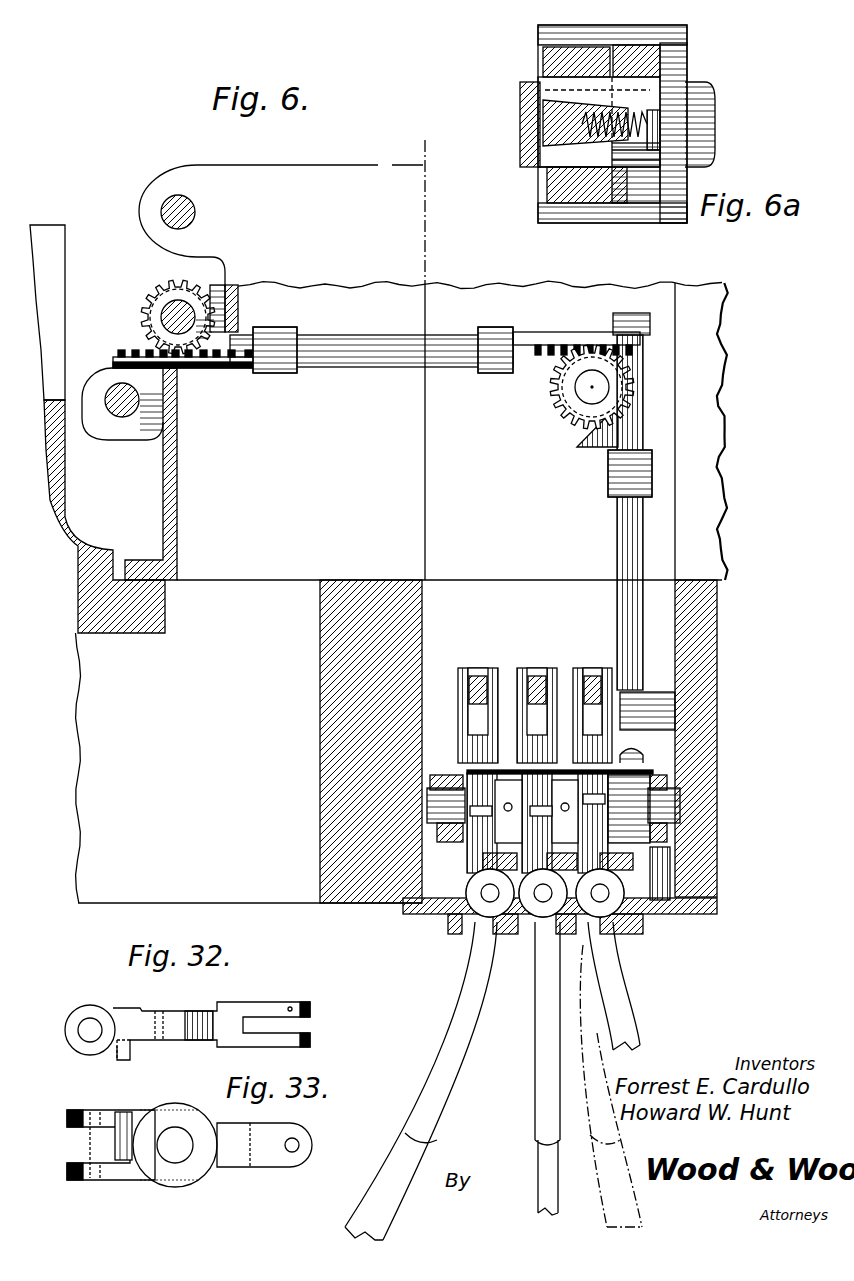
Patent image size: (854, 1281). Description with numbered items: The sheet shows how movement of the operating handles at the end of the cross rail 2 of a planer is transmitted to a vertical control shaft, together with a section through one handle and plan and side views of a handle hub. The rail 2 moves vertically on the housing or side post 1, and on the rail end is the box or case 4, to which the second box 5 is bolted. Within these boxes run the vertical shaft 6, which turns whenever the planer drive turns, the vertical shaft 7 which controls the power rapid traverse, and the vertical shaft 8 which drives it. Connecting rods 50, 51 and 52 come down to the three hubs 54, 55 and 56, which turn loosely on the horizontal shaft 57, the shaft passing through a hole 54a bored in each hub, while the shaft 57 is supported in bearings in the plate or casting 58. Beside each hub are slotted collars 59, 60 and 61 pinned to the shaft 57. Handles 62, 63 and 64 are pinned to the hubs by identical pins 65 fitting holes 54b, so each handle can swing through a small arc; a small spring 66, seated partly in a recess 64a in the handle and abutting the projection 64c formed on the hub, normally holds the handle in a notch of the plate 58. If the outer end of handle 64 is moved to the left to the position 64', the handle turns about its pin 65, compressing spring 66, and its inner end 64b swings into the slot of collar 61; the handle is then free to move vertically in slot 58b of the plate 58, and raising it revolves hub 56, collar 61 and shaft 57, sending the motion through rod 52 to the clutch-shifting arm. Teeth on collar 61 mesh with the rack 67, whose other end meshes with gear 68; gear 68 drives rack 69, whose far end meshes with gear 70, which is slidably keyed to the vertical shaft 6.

In FIG. 6, the housing or side post 1 is at (166, 636).
In FIG. 6, the cross rail 2 is at (124, 901).
In FIG. 6, the box or case 4 is at (718, 666).
In FIG. 6, the second box 5 is at (722, 410).
In FIG. 6, the vertical shaft 6 is at (197, 222).
In FIG. 6, the vertical shaft 7 is at (239, 303).
In FIG. 6, the vertical shaft 8 is at (114, 418).
In FIG. 6, the connecting rod 50 is at (478, 670).
In FIG. 6, the connecting rod 51 is at (537, 670).
In FIG. 6, the connecting rod 52 is at (590, 670).
In FIG. 6, the hub 54 is at (482, 845).
In FIG. 6A, the hub 54 is at (567, 207).
In FIG. 32, the hub 54 is at (268, 1002).
In FIG. 33, the hub 54 is at (264, 1145).
In FIG. 32, the hole in hub 54a is at (163, 1008).
In FIG. 33, the hole in hub 54a is at (181, 1128).
In FIG. 6, the inner end of handle 54b is at (670, 918).
In FIG. 32, the inner end of handle 54b is at (96, 1010).
In FIG. 33, the inner end of handle 54b is at (94, 1112).
In FIG. 6, the hub 55 is at (537, 845).
In FIG. 6, the hub 56 is at (598, 845).
In FIG. 6A, the horizontal shaft 57 is at (713, 127).
In FIG. 6, the plate or casting 58 is at (435, 918).
In FIG. 6, the slot in plate 58b is at (613, 940).
In FIG. 6, the slotted collar 59 is at (508, 811).
In FIG. 6A, the slotted collar 59 is at (685, 184).
In FIG. 6, the slotted collar 60 is at (565, 811).
In FIG. 6, the slotted collar 61 is at (644, 809).
In FIG. 6, the handle 62 is at (468, 1015).
In FIG. 6, the handle 63 is at (535, 1014).
In FIG. 6, the handle 64 is at (617, 986).
In FIG. 6, the shifted position of handle 64' is at (630, 1086).
In FIG. 6, the recess 64a is at (470, 858).
In FIG. 6A, the recess 64a is at (611, 113).
In FIG. 6, the inner end of handle 64b is at (537, 805).
In FIG. 6A, the inner end of handle 64b is at (543, 135).
In FIG. 6A, the projection 64c is at (653, 103).
In FIG. 32, the projection 64c is at (121, 1056).
In FIG. 33, the projection 64c is at (123, 1161).
In FIG. 6, the pin 65 is at (643, 920).
In FIG. 6A, the pin 65 is at (587, 176).
In FIG. 6, the spring 66 is at (554, 877).
In FIG. 6, the rack 67 is at (620, 622).
In FIG. 6, the gear 68 is at (575, 410).
In FIG. 6, the rack 69 is at (447, 333).
In FIG. 6, the gear 70 is at (160, 307).